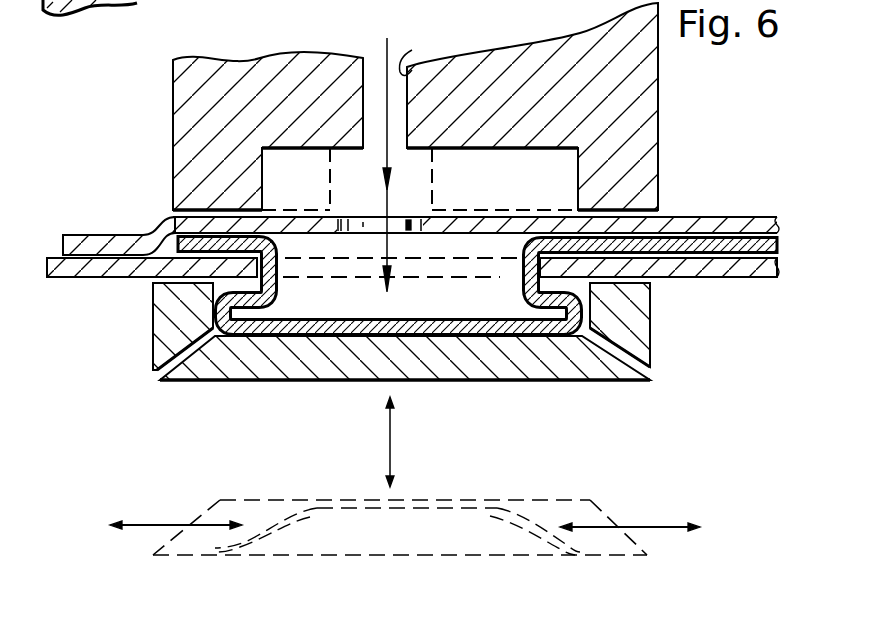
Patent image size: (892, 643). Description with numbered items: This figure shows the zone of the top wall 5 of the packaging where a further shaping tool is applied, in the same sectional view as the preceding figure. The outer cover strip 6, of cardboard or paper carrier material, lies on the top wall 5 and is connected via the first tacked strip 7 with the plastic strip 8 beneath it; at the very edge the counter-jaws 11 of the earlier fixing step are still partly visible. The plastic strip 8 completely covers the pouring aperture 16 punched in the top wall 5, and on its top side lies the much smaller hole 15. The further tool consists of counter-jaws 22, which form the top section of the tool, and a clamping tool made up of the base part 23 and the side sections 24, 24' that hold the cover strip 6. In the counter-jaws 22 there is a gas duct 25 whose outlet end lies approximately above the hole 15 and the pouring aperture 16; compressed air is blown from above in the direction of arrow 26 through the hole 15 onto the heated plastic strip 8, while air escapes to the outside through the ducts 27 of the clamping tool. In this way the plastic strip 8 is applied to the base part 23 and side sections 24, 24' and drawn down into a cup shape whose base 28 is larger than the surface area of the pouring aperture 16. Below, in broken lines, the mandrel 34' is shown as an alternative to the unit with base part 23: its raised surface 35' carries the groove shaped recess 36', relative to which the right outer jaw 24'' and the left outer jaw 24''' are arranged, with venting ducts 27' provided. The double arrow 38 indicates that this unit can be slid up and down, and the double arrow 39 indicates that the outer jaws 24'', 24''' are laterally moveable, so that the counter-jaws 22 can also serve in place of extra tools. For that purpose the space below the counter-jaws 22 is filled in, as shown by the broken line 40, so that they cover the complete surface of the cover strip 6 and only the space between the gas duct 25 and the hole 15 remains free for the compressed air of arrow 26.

The top wall 5 is at (60, 280).
The outer cover strip 6 is at (688, 214).
The first tacked strip 7 is at (187, 216).
The plastic strip 8 is at (740, 247).
The counter-jaws 11 is at (62, 18).
The hole 15 is at (427, 212).
The pouring aperture 16 is at (233, 377).
The counter-jaws 22 is at (640, 135).
The base part 23 is at (533, 366).
The side section 24 is at (656, 324).
The side section 24' is at (157, 326).
The outer jaw 24'' is at (618, 551).
The outer jaw 24''' is at (186, 557).
The gas duct 25 is at (418, 51).
The arrow 26 is at (385, 245).
The ducts 27 is at (399, 367).
The venting ducts 27' is at (266, 558).
The base 28 is at (308, 328).
The mandrel 34' is at (400, 571).
The raised surface 35' is at (405, 481).
The groove shaped recess 36' is at (529, 555).
The double arrow 38 is at (390, 433).
The double arrow 39 is at (152, 522).
The broken line 40 is at (280, 183).